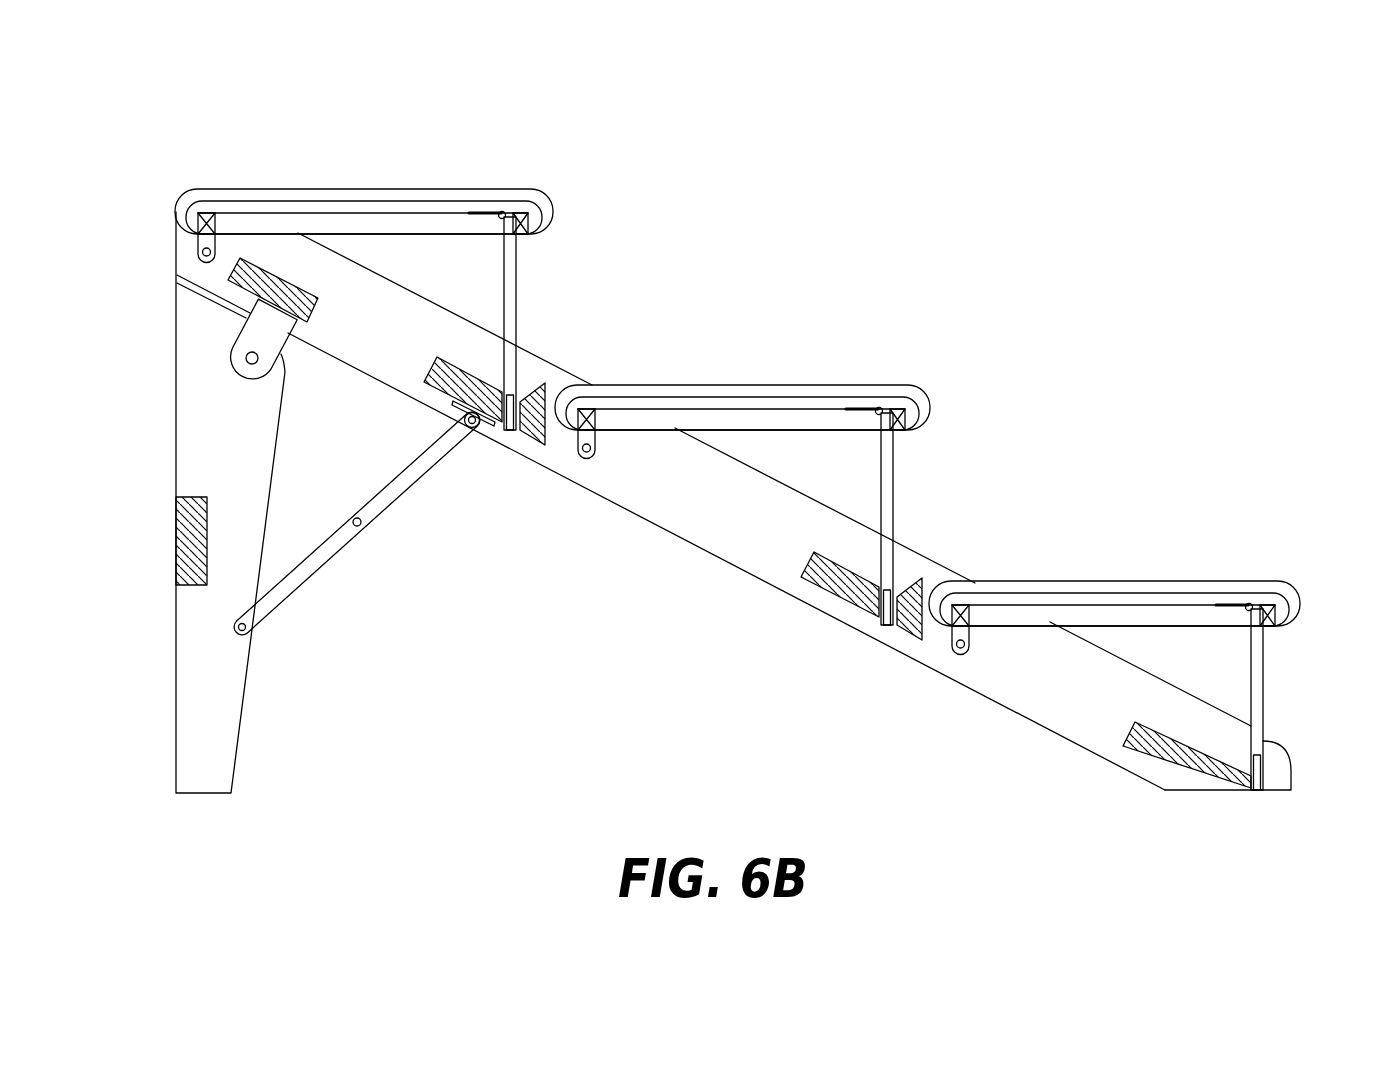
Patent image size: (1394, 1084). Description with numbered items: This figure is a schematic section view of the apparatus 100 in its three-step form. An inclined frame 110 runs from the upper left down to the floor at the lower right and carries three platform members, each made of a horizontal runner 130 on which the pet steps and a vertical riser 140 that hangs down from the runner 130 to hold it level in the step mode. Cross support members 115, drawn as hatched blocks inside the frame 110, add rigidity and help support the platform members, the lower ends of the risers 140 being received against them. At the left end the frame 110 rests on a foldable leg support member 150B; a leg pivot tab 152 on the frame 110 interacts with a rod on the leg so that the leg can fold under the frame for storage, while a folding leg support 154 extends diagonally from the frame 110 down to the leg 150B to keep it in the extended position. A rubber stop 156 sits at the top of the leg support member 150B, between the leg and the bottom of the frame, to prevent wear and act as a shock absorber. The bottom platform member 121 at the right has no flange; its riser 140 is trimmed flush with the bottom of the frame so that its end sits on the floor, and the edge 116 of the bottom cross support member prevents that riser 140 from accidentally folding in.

The apparatus 100 is at (921, 221).
The frame 110 is at (632, 503).
The cross support members 115 is at (528, 440).
The edge of the bottom cross support member 116 is at (1253, 790).
The bottom platform member 121 is at (1290, 580).
The runner 130 is at (383, 189).
The riser 140 is at (515, 280).
The foldable leg support member 150B is at (185, 662).
The leg pivot tab 152 is at (240, 363).
The folding leg support 154 is at (330, 553).
The rubber stop 156 is at (185, 288).